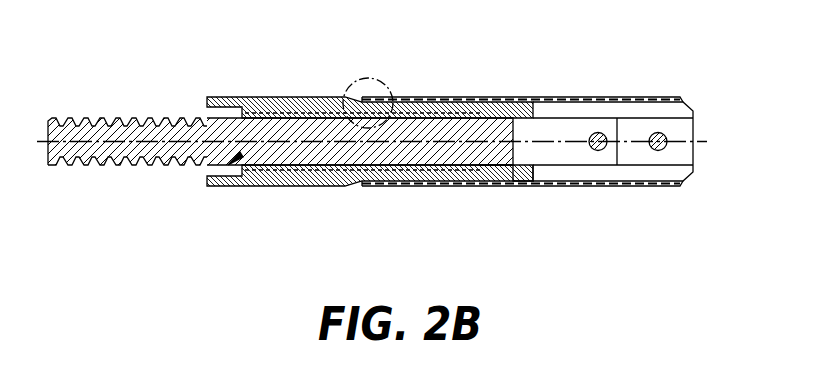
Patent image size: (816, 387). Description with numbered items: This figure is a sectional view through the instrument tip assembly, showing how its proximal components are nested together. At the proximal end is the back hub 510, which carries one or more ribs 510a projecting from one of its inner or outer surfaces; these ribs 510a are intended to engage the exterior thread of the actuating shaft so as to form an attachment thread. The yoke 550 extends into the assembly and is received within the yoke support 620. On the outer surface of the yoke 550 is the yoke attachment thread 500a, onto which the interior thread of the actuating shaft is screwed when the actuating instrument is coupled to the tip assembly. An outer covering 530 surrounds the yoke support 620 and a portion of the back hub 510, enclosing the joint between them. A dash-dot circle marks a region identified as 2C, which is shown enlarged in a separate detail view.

The yoke attachment thread 500a is at (80, 118).
The back hub 510 is at (253, 96).
The ribs 510a is at (258, 188).
The outer covering 530 is at (583, 96).
The yoke 550 is at (244, 158).
The yoke support 620 is at (491, 172).
The detail region 2C is at (387, 80).